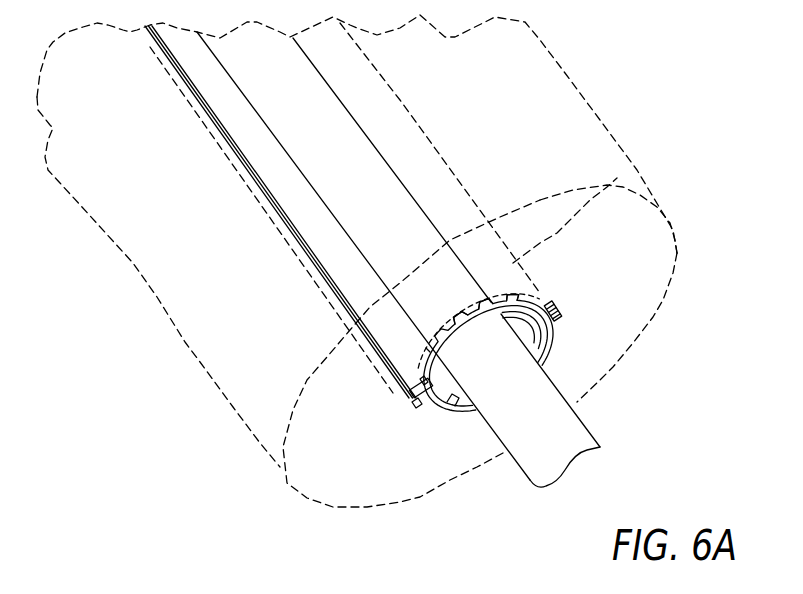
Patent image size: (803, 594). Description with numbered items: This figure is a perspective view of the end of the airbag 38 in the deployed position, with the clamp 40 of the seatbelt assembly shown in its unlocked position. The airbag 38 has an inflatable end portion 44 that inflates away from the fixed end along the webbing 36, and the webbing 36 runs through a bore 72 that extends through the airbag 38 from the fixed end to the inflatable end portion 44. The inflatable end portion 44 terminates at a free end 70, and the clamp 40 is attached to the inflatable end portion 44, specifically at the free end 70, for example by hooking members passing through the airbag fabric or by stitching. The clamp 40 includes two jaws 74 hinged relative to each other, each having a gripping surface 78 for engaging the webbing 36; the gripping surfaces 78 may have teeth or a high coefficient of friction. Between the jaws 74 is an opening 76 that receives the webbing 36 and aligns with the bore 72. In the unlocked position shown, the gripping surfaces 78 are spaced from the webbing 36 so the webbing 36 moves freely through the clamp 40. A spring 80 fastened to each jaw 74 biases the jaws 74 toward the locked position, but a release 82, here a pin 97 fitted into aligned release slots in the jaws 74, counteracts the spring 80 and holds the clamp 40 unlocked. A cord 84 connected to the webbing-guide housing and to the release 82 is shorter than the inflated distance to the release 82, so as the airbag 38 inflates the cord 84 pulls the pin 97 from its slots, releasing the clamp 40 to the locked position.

The webbing 36 is at (597, 438).
The airbag 38 is at (593, 110).
The clamp 40 is at (543, 297).
The inflatable end portion 44 is at (185, 343).
The free end 70 is at (367, 508).
The bore 72 is at (637, 170).
The jaws 74 is at (426, 348).
The opening 76 is at (528, 331).
The gripping surface 78 is at (462, 314).
The spring 80 is at (558, 318).
The release 82 is at (414, 410).
The cord 84 is at (160, 52).
The pin 97 is at (413, 392).